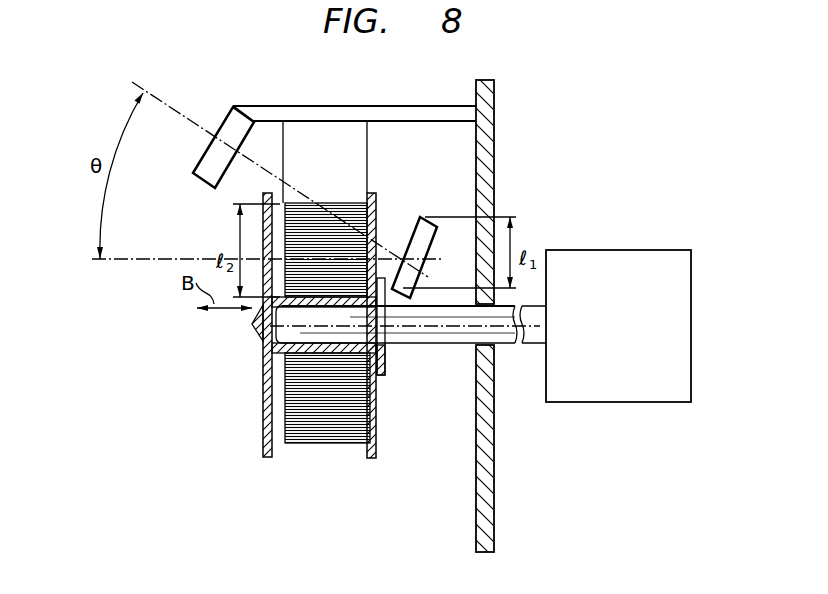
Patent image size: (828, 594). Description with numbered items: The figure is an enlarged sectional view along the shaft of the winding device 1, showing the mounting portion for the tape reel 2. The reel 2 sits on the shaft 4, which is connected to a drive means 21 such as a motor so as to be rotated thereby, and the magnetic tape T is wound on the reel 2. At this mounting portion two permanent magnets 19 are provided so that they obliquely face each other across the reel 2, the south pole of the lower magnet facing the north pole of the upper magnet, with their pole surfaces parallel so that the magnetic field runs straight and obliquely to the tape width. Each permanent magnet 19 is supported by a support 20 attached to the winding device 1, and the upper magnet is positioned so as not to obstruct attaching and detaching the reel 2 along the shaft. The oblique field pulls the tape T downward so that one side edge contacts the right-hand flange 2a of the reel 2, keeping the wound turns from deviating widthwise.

The winding device 1 is at (490, 475).
The tape reel 2 is at (254, 412).
The right-hand flange 2a is at (378, 400).
The shaft 4 is at (456, 345).
The permanent magnet 19 is at (224, 125).
The support 20 is at (463, 235).
The drive means 21 is at (645, 250).
The magnetic tape T is at (362, 147).